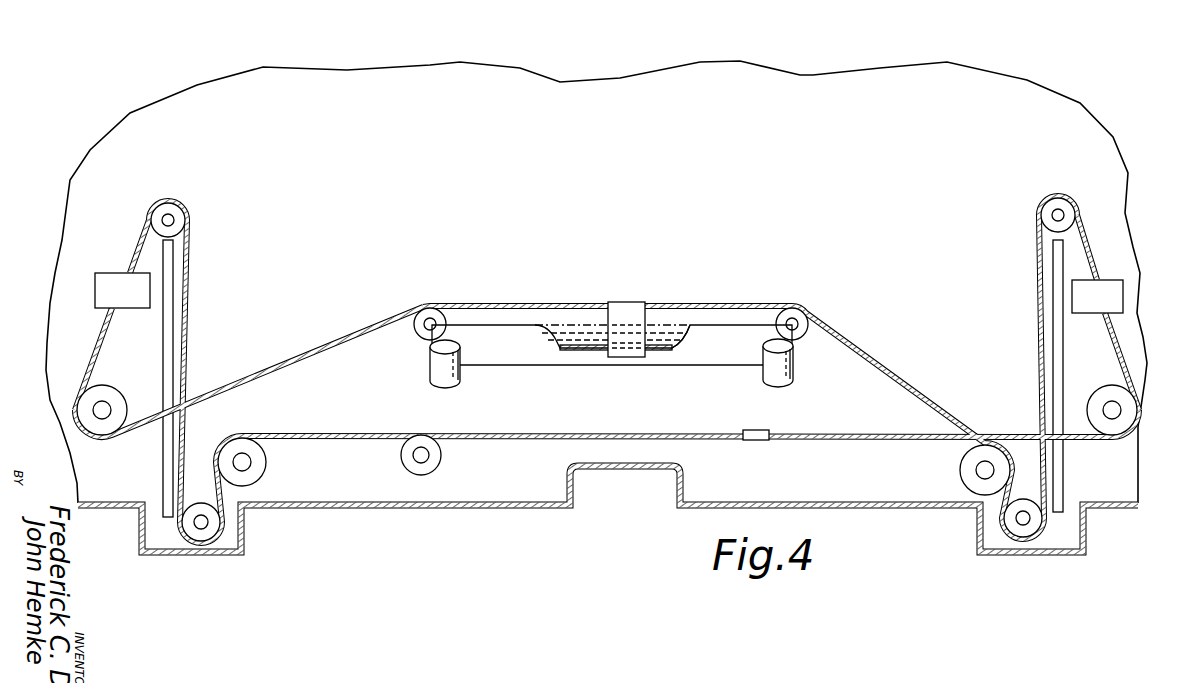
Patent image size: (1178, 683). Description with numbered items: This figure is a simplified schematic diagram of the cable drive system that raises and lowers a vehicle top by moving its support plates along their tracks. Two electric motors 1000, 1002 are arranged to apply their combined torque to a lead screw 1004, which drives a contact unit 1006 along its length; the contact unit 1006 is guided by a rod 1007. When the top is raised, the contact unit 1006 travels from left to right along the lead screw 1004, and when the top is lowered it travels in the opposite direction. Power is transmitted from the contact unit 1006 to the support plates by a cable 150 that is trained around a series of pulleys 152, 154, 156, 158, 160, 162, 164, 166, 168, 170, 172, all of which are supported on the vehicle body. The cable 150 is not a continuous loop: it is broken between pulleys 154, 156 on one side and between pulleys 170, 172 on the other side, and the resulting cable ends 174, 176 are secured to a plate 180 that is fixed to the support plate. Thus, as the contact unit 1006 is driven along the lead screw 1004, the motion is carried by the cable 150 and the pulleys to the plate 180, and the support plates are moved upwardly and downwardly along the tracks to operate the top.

The cable 150 is at (862, 352).
The pulley 152 is at (433, 318).
The pulley 154 is at (110, 395).
The pulley 156 is at (180, 214).
The pulley 158 is at (200, 540).
The pulley 160 is at (268, 462).
The pulley 162 is at (441, 455).
The pulley 164 is at (800, 318).
The pulley 166 is at (960, 470).
The pulley 168 is at (1024, 538).
The pulley 170 is at (1110, 436).
The pulley 172 is at (1048, 212).
The cable end 174 is at (128, 270).
The cable end 176 is at (118, 312).
The plate 180 is at (95, 286).
The electric motor 1000 is at (462, 378).
The electric motor 1002 is at (790, 378).
The lead screw 1004 is at (590, 352).
The contact unit 1006 is at (630, 312).
The rod 1007 is at (672, 332).